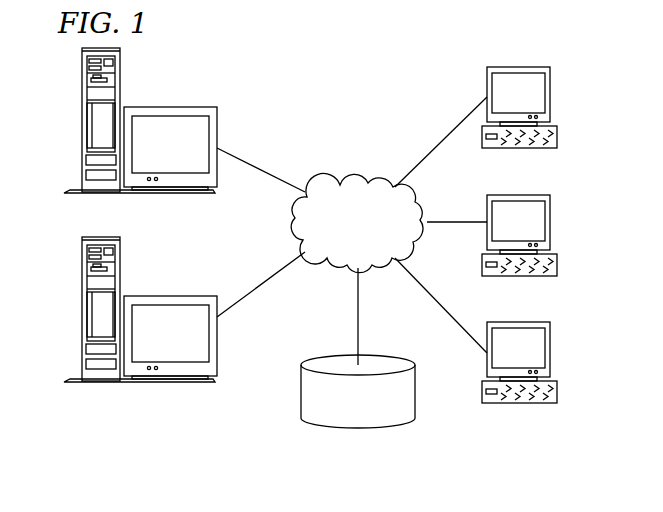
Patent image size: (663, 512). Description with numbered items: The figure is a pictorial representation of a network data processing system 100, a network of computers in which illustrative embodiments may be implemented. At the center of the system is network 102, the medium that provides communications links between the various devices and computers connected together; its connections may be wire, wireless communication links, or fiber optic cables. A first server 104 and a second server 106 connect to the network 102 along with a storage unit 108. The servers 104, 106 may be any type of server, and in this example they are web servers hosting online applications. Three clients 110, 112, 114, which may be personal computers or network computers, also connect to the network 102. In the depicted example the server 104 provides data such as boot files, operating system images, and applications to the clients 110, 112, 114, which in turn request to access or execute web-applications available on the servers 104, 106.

The network data processing system 100 is at (408, 81).
The network 102 is at (333, 177).
The server 104 is at (82, 122).
The server 106 is at (82, 311).
The storage unit 108 is at (343, 428).
The client 110 is at (551, 93).
The client 112 is at (551, 222).
The client 114 is at (551, 348).